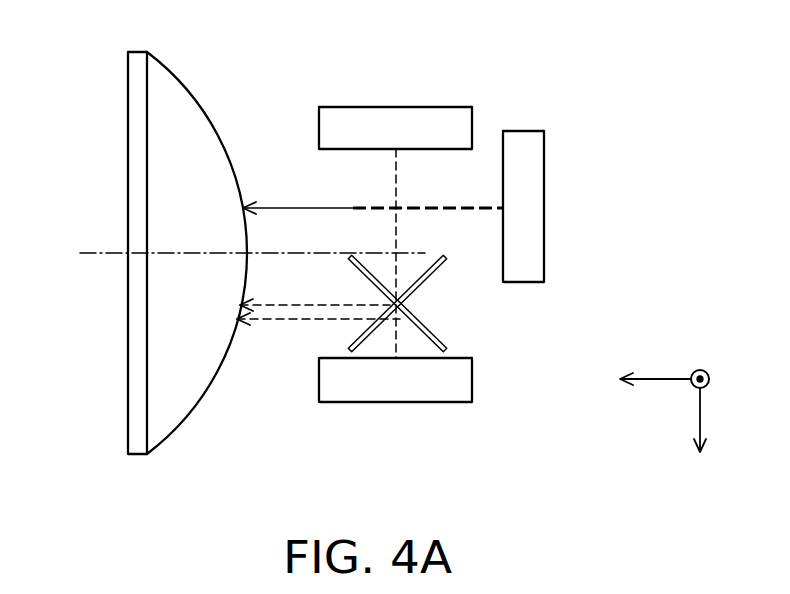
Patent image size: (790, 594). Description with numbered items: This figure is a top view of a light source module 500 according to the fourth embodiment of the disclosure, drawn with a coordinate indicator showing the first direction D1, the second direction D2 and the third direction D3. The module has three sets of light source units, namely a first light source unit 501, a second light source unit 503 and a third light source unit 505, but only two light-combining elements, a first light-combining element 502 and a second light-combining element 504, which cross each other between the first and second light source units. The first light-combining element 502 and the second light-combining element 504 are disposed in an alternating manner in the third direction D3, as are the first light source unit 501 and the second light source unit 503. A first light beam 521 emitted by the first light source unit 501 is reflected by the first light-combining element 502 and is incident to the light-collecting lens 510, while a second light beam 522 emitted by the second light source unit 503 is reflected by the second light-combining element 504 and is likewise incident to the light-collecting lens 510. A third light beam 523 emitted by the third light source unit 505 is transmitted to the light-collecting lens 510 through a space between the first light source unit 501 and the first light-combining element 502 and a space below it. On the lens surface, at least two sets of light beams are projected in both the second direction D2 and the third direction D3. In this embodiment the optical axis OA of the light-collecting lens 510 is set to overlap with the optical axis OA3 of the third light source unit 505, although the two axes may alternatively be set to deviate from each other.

The projection device / optical system 500 is at (629, 52).
The light-collecting lens 510 is at (168, 83).
The first light source unit 501 is at (410, 116).
The first light-combining element 502 is at (431, 277).
The second light source unit 503 is at (410, 393).
The second light-combining element 504 is at (435, 338).
The third light source unit 505 is at (535, 205).
The first light beam 521 is at (284, 305).
The second light beam 522 is at (270, 322).
The third light beam 523 is at (293, 208).
The optical axis OA is at (85, 258).
The optical axis of the third light source unit OA3 is at (425, 212).
The first direction D1 is at (641, 381).
The second direction D2 is at (700, 440).
The third direction D3 is at (700, 360).